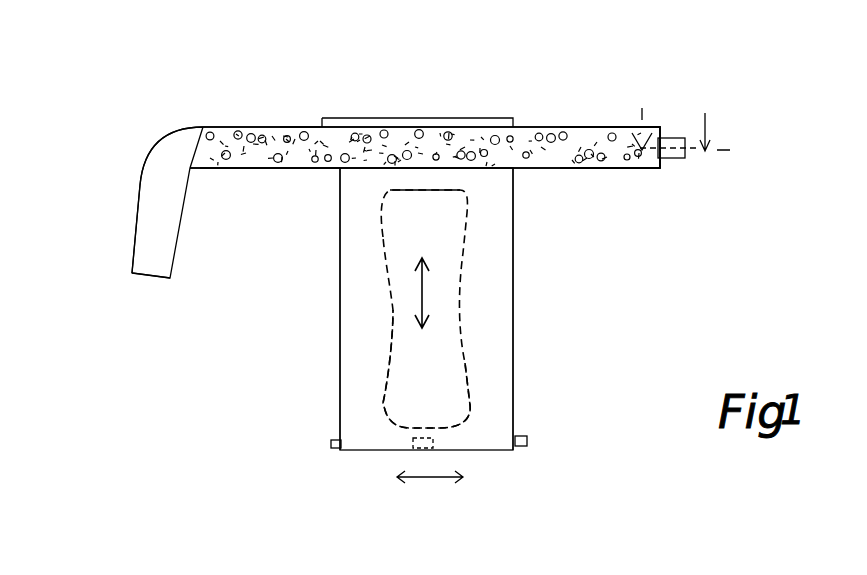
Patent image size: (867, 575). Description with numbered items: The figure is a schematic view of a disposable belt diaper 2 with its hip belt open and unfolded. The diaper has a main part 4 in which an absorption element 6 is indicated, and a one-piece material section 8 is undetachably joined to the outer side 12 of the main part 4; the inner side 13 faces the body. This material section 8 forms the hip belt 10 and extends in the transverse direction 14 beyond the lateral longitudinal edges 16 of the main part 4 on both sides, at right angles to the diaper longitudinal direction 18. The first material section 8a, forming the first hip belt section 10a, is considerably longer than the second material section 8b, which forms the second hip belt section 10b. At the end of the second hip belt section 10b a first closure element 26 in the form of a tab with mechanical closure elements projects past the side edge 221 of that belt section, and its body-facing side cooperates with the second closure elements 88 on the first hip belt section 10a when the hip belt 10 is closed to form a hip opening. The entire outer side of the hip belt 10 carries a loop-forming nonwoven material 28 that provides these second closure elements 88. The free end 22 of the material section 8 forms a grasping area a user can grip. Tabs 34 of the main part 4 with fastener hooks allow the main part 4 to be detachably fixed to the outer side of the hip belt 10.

The disposable belt diaper 2 is at (321, 75).
The main part 4 is at (502, 297).
The absorption element 6 is at (463, 335).
The one-piece material section 8 is at (412, 133).
The hip belt 10 is at (425, 147).
The first material section 8a is at (223, 123).
The first hip belt section 10a is at (167, 200).
The second material section 8b is at (585, 127).
The second hip belt section 10b is at (610, 147).
The outer side 12 is at (496, 200).
The inner side 13 is at (493, 253).
The transverse direction 14 is at (430, 489).
The lateral longitudinal edges 16 is at (513, 210).
The diaper longitudinal direction 18 is at (433, 293).
The free end 22 is at (132, 245).
The first closure element 26 is at (673, 137).
The loop-forming nonwoven material 28 is at (262, 162).
The tabs 34 is at (332, 447).
The second closure elements 88 is at (298, 167).
The side edge 221 is at (667, 165).